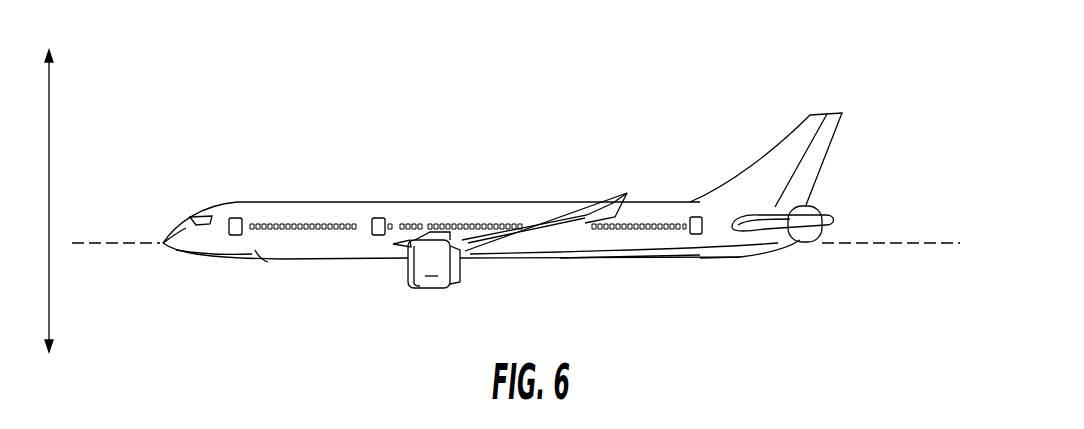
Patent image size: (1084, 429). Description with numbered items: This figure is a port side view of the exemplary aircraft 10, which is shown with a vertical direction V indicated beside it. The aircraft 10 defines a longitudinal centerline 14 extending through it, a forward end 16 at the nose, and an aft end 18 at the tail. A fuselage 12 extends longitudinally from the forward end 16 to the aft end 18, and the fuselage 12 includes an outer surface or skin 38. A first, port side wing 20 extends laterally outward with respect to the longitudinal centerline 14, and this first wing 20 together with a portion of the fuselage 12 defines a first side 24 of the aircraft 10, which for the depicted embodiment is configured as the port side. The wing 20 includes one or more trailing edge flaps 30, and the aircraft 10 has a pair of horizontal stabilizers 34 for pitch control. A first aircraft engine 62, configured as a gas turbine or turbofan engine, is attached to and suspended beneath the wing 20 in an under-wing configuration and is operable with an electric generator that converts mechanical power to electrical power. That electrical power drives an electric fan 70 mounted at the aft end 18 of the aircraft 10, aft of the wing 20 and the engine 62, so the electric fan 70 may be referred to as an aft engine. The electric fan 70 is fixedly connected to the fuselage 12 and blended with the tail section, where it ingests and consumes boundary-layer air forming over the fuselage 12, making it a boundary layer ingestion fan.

The aircraft 10 is at (216, 150).
The fuselage 12 is at (260, 260).
The longitudinal centerline 14 is at (87, 247).
The forward end 16 is at (168, 256).
The aft end 18 is at (753, 255).
The port side wing 20 is at (557, 228).
The first side 24 is at (623, 251).
The trailing edge flap 30 is at (790, 148).
The horizontal stabilizer 34 is at (790, 246).
The outer surface or skin 38 is at (412, 202).
The first aircraft engine 62 is at (414, 289).
The electric fan 70 is at (813, 198).
The vertical axis V is at (49, 201).